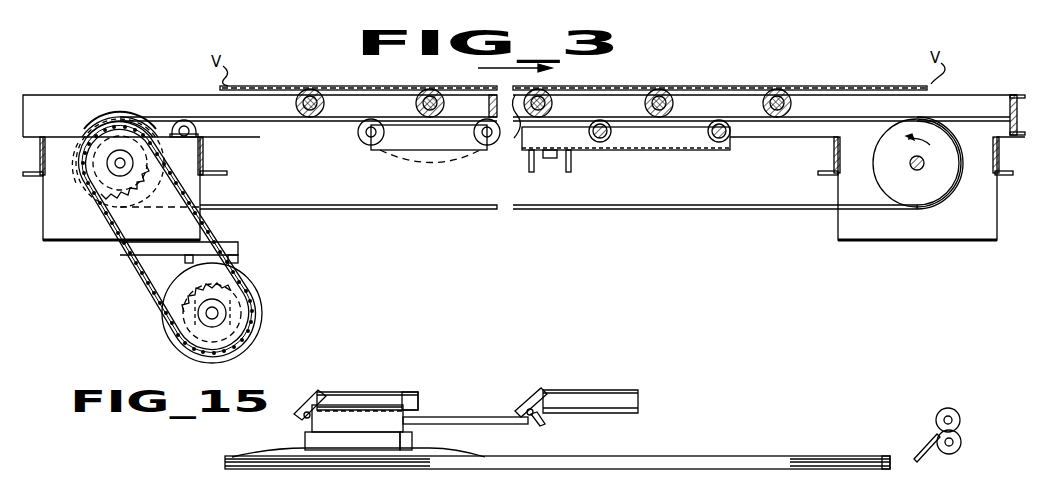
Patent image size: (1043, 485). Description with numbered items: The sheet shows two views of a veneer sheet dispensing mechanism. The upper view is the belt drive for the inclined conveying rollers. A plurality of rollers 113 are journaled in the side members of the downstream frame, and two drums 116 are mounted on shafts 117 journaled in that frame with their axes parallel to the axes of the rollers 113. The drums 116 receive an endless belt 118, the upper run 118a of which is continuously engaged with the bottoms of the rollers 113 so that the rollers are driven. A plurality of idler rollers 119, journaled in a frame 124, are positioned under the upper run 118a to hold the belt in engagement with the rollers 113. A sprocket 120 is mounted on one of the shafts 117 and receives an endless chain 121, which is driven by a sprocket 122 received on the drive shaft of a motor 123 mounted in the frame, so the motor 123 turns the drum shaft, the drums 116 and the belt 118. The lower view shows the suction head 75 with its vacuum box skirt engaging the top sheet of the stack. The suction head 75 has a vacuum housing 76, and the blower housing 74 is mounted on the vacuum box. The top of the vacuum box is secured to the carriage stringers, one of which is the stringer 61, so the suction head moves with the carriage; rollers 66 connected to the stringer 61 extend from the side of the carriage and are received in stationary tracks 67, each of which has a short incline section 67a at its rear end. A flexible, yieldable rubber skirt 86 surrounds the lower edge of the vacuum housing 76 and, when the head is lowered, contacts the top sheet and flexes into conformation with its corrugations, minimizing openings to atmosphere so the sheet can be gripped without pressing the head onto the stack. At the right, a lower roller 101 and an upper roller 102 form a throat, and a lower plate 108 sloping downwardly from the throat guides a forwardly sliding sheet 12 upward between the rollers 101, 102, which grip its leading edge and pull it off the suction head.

In FIG. 3, the rollers 113 is at (821, 103).
In FIG. 3, the drums 116 is at (930, 218).
In FIG. 3, the shafts 117 is at (933, 178).
In FIG. 3, the endless belt 118 is at (476, 211).
In FIG. 3, the upper run of belt 118a is at (135, 121).
In FIG. 3, the idler rollers 119 is at (478, 150).
In FIG. 3, the sprocket 120 is at (110, 188).
In FIG. 3, the endless chain 121 is at (139, 271).
In FIG. 3, the sprocket 122 is at (230, 310).
In FIG. 3, the motor 123 is at (251, 285).
In FIG. 3, the frame 124 is at (362, 144).
In FIG. 15, the belt 12 is at (225, 462).
In FIG. 15, the carriage stringer 61 is at (475, 417).
In FIG. 15, the rollers 66 is at (541, 417).
In FIG. 15, the stationary tracks 67 is at (634, 390).
In FIG. 15, the incline section 67a is at (541, 400).
In FIG. 15, the blower housing 74 is at (394, 414).
In FIG. 15, the suction head 75 is at (298, 441).
In FIG. 15, the vacuum housing 76 is at (408, 440).
In FIG. 15, the skirt 86 is at (432, 453).
In FIG. 15, the lower roller 101 is at (960, 452).
In FIG. 15, the upper roller 102 is at (940, 410).
In FIG. 15, the lower plate 108 is at (930, 440).